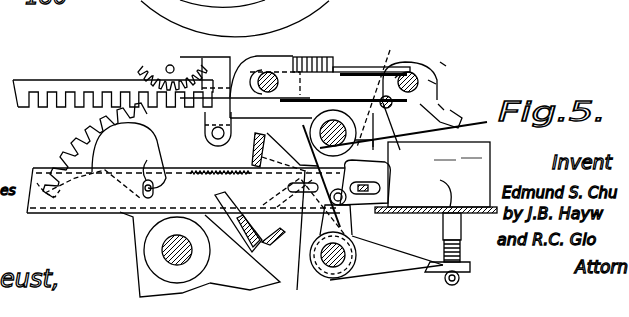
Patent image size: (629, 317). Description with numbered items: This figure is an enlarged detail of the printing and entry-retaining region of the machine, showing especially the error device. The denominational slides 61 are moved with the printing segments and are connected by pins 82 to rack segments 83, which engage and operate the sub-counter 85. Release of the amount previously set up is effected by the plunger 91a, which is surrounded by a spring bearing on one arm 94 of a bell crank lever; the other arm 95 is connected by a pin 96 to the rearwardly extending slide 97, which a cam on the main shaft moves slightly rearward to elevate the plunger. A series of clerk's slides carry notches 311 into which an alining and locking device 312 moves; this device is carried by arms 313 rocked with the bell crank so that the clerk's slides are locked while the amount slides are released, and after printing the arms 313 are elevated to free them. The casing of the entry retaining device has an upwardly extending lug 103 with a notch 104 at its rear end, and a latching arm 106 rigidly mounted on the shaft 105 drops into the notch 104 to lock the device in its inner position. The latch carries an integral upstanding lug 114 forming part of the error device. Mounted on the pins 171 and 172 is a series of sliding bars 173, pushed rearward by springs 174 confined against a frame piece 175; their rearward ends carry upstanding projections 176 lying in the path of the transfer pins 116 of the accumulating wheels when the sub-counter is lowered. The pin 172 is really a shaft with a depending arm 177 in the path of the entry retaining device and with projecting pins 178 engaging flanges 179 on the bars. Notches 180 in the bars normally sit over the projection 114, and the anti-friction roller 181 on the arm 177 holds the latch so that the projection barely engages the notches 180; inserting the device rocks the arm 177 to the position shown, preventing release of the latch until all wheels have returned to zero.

The sub-counter 85 is at (150, 57).
The transfer pins 116 is at (168, 65).
The rack segments 83 is at (82, 126).
The pins 82 is at (101, 160).
The upstanding projections 176 is at (205, 115).
The denominational slides 61 is at (60, 218).
The notches 311 is at (220, 161).
The alining and locking device 312 is at (270, 167).
The rearwardly extending slide 97 is at (82, 218).
The arms 313 is at (285, 268).
The sliding bars 173 is at (286, 110).
The pin 171 is at (265, 74).
The springs 174 is at (308, 57).
The frame piece 175 is at (330, 62).
The shaft 105 is at (341, 122).
The pin 172 is at (413, 74).
The flanges 179 is at (398, 78).
The projecting pins 178 is at (445, 62).
The notches 180 is at (430, 80).
The lug 114 is at (440, 108).
The latching arm 106 is at (461, 126).
The depending arm 177 is at (386, 150).
The anti-friction roller 181 is at (386, 108).
The plunger 91a is at (500, 170).
The lug 103 is at (446, 153).
The notch 104 is at (473, 151).
The pin 96 is at (347, 197).
The arm 95 is at (348, 230).
The arm 94 is at (357, 258).